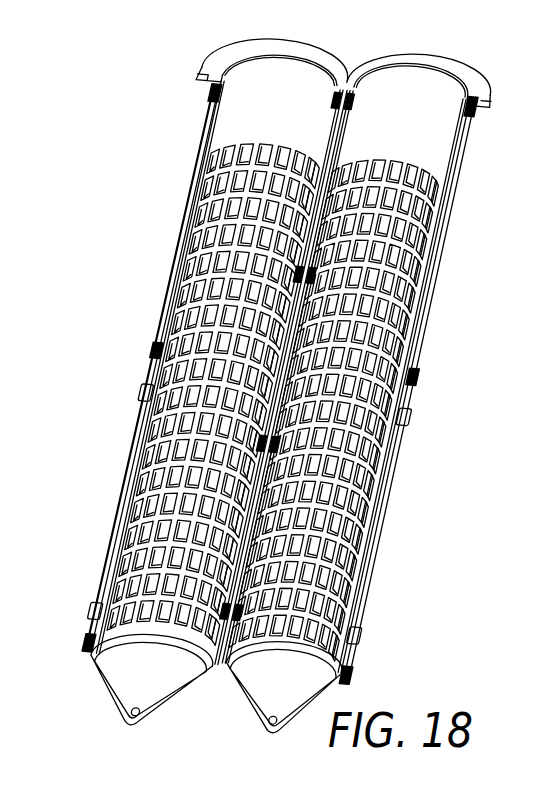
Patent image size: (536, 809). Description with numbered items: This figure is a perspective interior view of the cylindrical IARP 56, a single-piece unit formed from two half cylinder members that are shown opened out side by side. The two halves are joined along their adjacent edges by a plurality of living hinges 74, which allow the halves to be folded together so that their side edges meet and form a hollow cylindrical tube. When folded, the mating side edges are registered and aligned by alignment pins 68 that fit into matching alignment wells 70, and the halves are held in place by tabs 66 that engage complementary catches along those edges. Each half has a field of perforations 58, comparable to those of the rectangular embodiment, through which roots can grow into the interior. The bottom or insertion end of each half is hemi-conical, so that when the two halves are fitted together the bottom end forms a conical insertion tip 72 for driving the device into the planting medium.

The cylindrical IARP 56 is at (98, 488).
The perforations 58 is at (392, 287).
The tabs 66 is at (207, 177).
The alignment pins 68 is at (419, 378).
The alignment wells 70 is at (157, 352).
The conical insertion tip 72 is at (118, 711).
The living hinges 74 is at (340, 95).